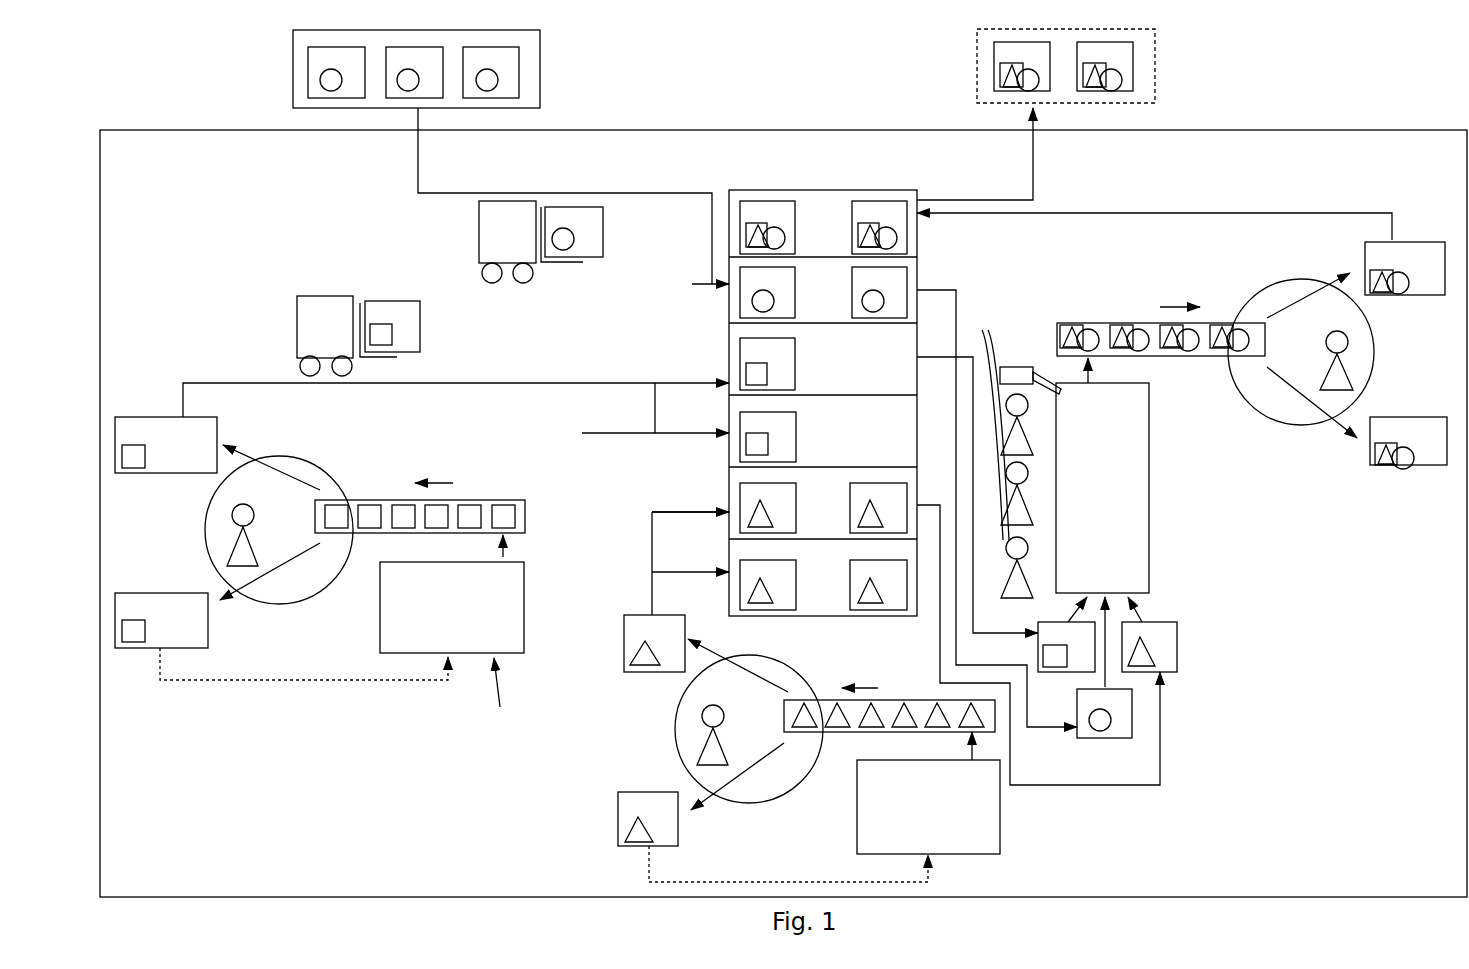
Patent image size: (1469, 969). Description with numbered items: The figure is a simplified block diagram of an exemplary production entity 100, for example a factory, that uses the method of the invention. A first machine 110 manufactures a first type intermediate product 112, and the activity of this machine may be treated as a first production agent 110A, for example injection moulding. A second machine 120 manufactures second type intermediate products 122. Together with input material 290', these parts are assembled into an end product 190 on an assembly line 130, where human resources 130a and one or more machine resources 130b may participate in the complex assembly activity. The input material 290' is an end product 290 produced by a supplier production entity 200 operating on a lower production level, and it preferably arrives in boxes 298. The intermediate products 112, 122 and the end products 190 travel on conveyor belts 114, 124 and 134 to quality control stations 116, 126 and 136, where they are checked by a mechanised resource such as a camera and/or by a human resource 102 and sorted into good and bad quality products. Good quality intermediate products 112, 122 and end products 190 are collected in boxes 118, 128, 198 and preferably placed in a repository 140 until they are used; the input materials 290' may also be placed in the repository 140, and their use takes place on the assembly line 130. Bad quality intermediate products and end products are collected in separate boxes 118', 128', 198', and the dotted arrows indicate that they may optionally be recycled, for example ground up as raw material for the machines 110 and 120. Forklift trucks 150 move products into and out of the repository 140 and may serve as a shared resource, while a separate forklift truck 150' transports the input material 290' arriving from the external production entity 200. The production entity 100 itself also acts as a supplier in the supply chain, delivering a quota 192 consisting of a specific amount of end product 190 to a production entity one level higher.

The production entity 100 is at (1300, 128).
The human resource 102 is at (243, 518).
The first machine 110 is at (524, 593).
The first production agent 110A is at (509, 703).
The first type intermediate product 112 is at (377, 324).
The conveyor belt 114 is at (527, 517).
The quality control station 116 is at (323, 465).
The box 118 is at (602, 486).
The box for bad quality intermediate products 118' is at (304, 699).
The second machine 120 is at (857, 787).
The second type intermediate product 122 is at (932, 700).
The conveyor belt 124 is at (823, 700).
The quality control station 126 is at (688, 682).
The box 128 is at (901, 601).
The box for bad quality intermediate products 128' is at (732, 837).
The assembly line 130 is at (1150, 555).
The human resources 130a is at (999, 451).
The machine resource 130b is at (1030, 367).
The conveyor belt 134 is at (1098, 322).
The quality control station 136 is at (1357, 405).
The repository 140 is at (857, 188).
The forklift truck 150 is at (293, 304).
The forklift truck 150' is at (477, 214).
The end product 190 is at (1132, 347).
The quota 192 is at (977, 47).
The box 198 is at (1289, 157).
The box for bad quality end products 198' is at (1417, 484).
The production entity 200 is at (542, 68).
The end product 290 is at (272, 95).
The input material 290' is at (686, 243).
The box 298 is at (603, 227).